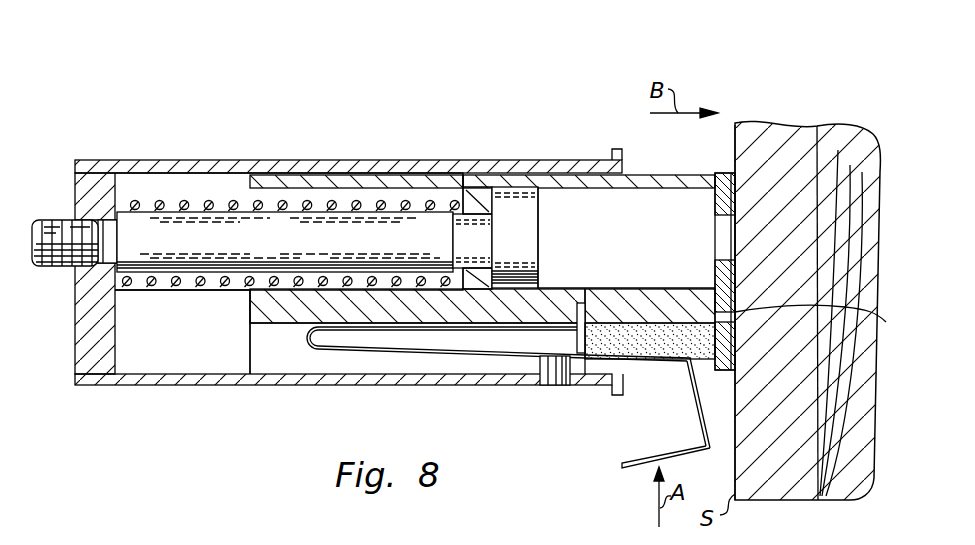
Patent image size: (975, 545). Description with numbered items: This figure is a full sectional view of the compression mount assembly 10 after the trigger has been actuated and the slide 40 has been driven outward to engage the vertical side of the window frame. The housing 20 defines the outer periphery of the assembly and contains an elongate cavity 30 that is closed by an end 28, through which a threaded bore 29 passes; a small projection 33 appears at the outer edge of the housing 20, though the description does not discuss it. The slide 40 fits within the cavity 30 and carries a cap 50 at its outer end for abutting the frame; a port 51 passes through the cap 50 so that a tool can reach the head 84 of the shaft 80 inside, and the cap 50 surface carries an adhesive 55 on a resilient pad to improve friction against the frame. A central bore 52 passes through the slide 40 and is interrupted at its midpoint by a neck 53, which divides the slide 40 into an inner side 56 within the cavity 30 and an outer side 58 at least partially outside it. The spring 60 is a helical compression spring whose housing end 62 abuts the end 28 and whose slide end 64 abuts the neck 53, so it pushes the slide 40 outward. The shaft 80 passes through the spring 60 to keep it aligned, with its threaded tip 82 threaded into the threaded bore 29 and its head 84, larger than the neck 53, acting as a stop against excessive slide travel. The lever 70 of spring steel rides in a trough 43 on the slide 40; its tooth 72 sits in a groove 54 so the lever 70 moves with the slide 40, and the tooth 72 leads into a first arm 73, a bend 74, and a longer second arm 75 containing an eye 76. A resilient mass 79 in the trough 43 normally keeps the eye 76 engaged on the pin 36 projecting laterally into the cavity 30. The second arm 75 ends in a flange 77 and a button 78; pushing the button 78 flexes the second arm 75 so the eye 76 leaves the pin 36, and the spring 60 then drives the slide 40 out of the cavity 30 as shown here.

The compression mount assembly 10 is at (190, 88).
The housing 20 is at (173, 385).
The end 28 is at (96, 350).
The threaded bore 29 is at (102, 218).
The cavity 30 is at (172, 332).
The tab 33 is at (615, 149).
The pin 36 is at (558, 386).
The slide 40 is at (690, 182).
The trough 43 is at (286, 350).
The cap 50 is at (723, 198).
The port 51 is at (723, 237).
The central bore 52 is at (644, 222).
The neck 53 is at (476, 196).
The groove 54 is at (600, 322).
The adhesive 55 is at (737, 183).
The inner side 56 is at (248, 313).
The outer side 58 is at (824, 320).
The spring 60 is at (288, 200).
The housing end 62 is at (137, 194).
The slide end 64 is at (460, 193).
The lever 70 is at (334, 372).
The tooth 72 is at (576, 305).
The first arm 73 is at (370, 332).
The bend 74 is at (312, 340).
The second arm 75 is at (468, 356).
The eye 76 is at (628, 364).
The flange 77 is at (700, 419).
The button 78 is at (633, 471).
The resilient mass 79 is at (672, 312).
The shaft 80 is at (227, 249).
The threaded tip 82 is at (63, 267).
The head 84 is at (525, 224).